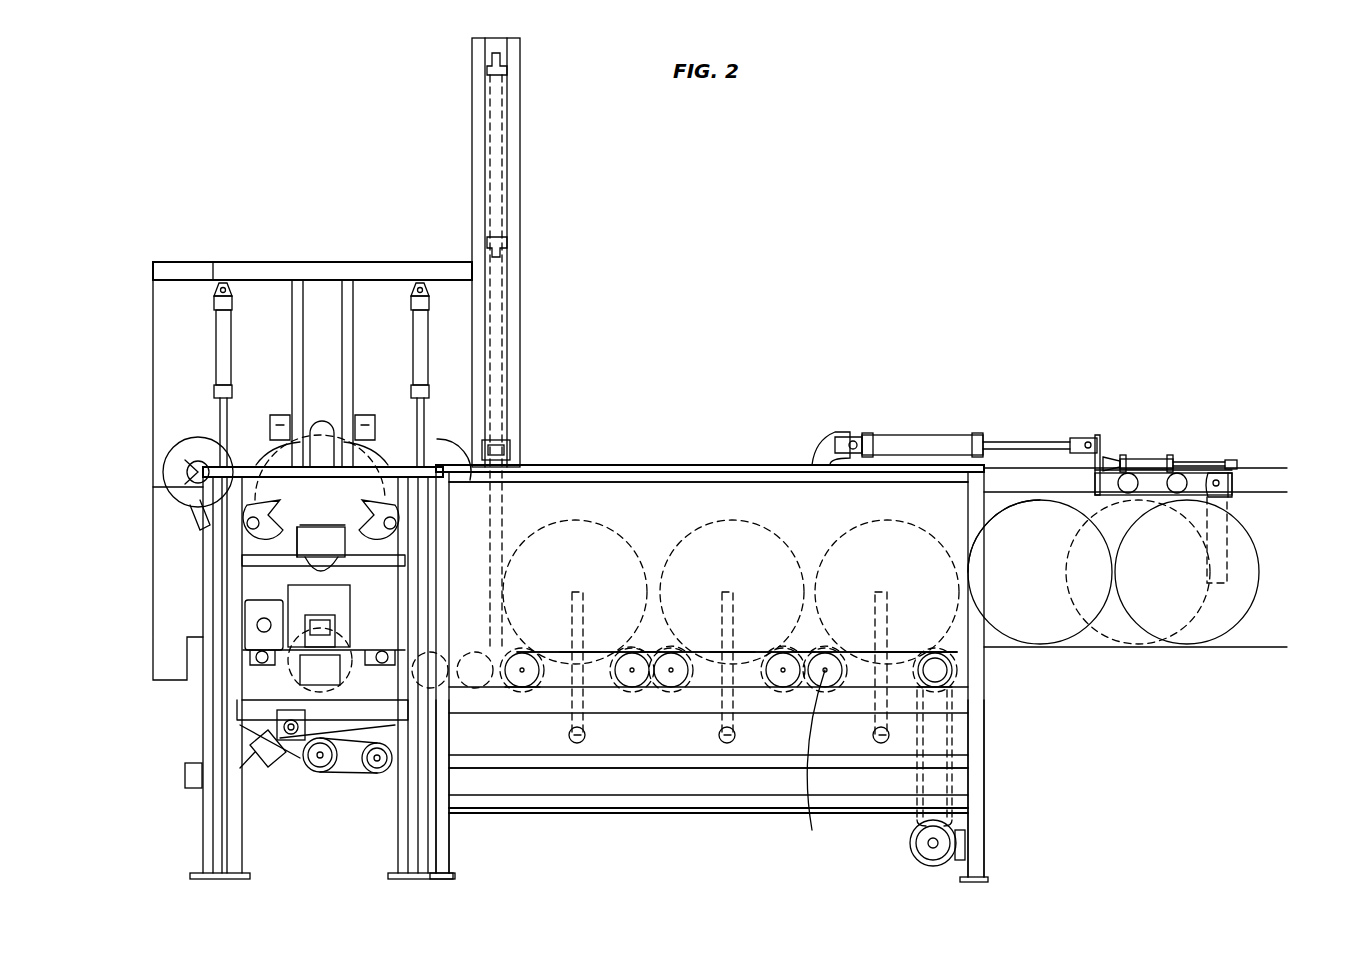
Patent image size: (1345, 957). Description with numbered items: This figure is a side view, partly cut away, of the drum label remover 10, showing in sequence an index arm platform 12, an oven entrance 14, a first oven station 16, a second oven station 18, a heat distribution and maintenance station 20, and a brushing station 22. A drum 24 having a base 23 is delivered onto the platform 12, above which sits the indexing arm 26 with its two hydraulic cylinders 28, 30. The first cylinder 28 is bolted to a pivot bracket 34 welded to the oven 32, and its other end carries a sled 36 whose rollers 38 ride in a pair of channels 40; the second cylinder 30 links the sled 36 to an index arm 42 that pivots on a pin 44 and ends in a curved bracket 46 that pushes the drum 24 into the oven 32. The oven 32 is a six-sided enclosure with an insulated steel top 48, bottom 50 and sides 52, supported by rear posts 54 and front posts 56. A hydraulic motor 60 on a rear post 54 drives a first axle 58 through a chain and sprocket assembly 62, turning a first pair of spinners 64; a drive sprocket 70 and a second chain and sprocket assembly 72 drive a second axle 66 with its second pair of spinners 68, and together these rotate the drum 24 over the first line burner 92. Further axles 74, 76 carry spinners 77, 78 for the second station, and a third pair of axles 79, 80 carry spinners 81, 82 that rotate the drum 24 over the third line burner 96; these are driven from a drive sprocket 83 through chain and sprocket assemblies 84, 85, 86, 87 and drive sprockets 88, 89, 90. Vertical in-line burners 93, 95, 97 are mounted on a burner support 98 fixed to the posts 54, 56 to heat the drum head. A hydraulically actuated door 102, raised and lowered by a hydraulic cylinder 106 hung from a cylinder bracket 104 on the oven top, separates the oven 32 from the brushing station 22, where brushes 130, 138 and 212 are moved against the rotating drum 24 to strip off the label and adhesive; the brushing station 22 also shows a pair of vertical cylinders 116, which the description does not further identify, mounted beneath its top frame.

The drum label remover 10 is at (737, 288).
The index arm platform 12 is at (1105, 647).
The oven entrance 14 is at (997, 498).
The first oven station 16 is at (886, 520).
The second oven station 18 is at (733, 520).
The heat distribution and maintenance station 20 is at (574, 520).
The brushing station 22 is at (245, 152).
The base 23 is at (1040, 628).
The drum 24 is at (1050, 640).
The indexing arm 26 is at (1100, 360).
The first cylinder 28 is at (915, 432).
The second cylinder 30 is at (1136, 457).
The oven 32 is at (707, 412).
The pivot bracket 34 is at (819, 437).
The sled 36 is at (1100, 437).
The rollers 38 is at (1180, 478).
The channels 40 is at (1200, 475).
The index arm 42 is at (1228, 497).
The pin 44 is at (1224, 479).
The curved bracket 46 is at (1222, 575).
The insulated steel top 48 is at (612, 468).
The bottom 50 is at (700, 812).
The sides 52 is at (527, 488).
The rear posts 54 is at (985, 848).
The front posts 56 is at (450, 868).
The first axle 58 is at (935, 672).
The hydraulic motor 60 is at (930, 866).
The chain and sprocket assembly 62 is at (907, 823).
The first pair of spinners 64 is at (957, 683).
The second axle 66 is at (812, 761).
The second pair of spinners 68 is at (826, 692).
The drive sprocket 70 is at (937, 692).
The second chain and sprocket assembly 72 is at (902, 652).
The axle 74 is at (783, 670).
The axle 76 is at (671, 670).
The pair of spinners 77 is at (785, 692).
The pair of spinners 78 is at (673, 692).
The axle 79 is at (632, 670).
The axle 80 is at (522, 670).
The pair of spinners 81 is at (625, 692).
The pair of spinners 82 is at (528, 688).
The drive sprocket 83 is at (838, 655).
The chain and sprocket assembly 84 is at (802, 652).
The chain and sprocket assembly 85 is at (750, 652).
The chain and sprocket assembly 86 is at (645, 653).
The chain and sprocket assembly 87 is at (597, 652).
The drive sprocket 88 is at (776, 655).
The drive sprocket 89 is at (684, 655).
The drive sprocket 90 is at (626, 655).
The first line burner 92 is at (881, 743).
The vertical in-line burner 93 is at (878, 592).
The vertical in-line burner 95 is at (726, 592).
The third line burner 96 is at (577, 743).
The vertical in-line burner 97 is at (575, 592).
The burner support 98 is at (553, 765).
The door 102 is at (510, 348).
The cylinder bracket 104 is at (520, 70).
The hydraulic cylinder 106 is at (497, 208).
The wrapping station cylinders 116 is at (222, 340).
The brush 130 is at (388, 520).
The brush 138 is at (290, 503).
The brush 212 is at (340, 600).